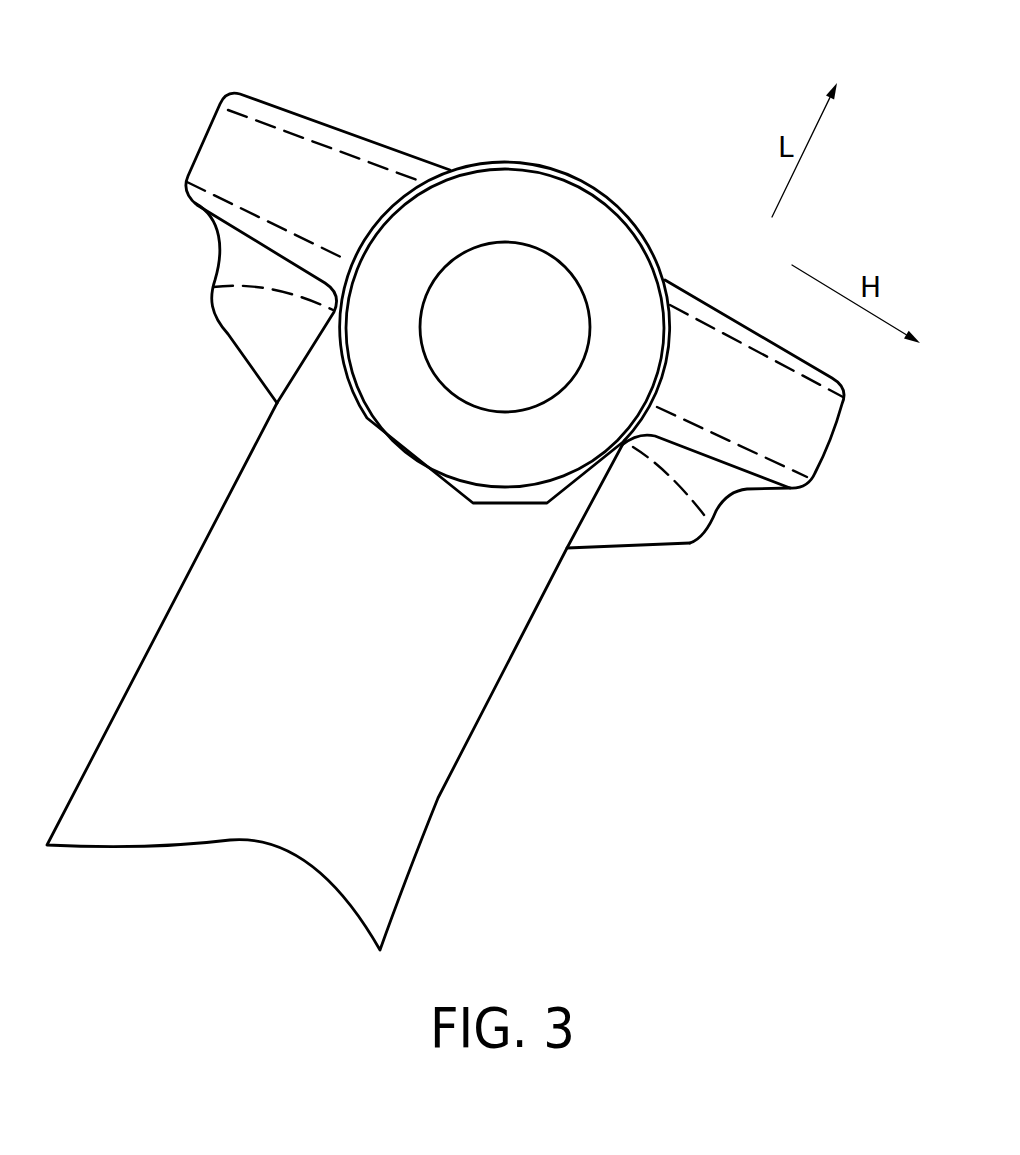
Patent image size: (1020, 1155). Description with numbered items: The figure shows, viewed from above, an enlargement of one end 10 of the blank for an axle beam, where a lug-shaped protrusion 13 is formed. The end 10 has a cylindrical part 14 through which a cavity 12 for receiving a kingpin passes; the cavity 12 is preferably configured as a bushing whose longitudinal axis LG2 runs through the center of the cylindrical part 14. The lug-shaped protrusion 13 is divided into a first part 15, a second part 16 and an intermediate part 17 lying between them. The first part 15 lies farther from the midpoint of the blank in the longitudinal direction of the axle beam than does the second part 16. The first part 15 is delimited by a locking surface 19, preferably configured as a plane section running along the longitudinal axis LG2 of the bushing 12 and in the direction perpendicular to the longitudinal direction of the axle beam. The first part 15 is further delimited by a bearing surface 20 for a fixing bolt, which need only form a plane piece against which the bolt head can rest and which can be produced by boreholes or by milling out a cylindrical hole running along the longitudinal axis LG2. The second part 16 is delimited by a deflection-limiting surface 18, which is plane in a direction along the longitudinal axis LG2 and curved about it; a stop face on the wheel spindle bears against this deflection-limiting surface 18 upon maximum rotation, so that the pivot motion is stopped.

The end of the blank 10 is at (552, 149).
The cavity 12 is at (443, 352).
The lug-shaped protrusion 13 is at (738, 543).
The cylindrical part 14 is at (562, 203).
The first part 15 is at (807, 432).
The second part 16 is at (613, 532).
The intermediate part 17 is at (243, 267).
The deflection-limiting surface 18 is at (683, 490).
The locking surface 19 is at (263, 106).
The bearing surface 20 is at (773, 463).
The longitudinal axis of the bushing LG2 is at (504, 328).